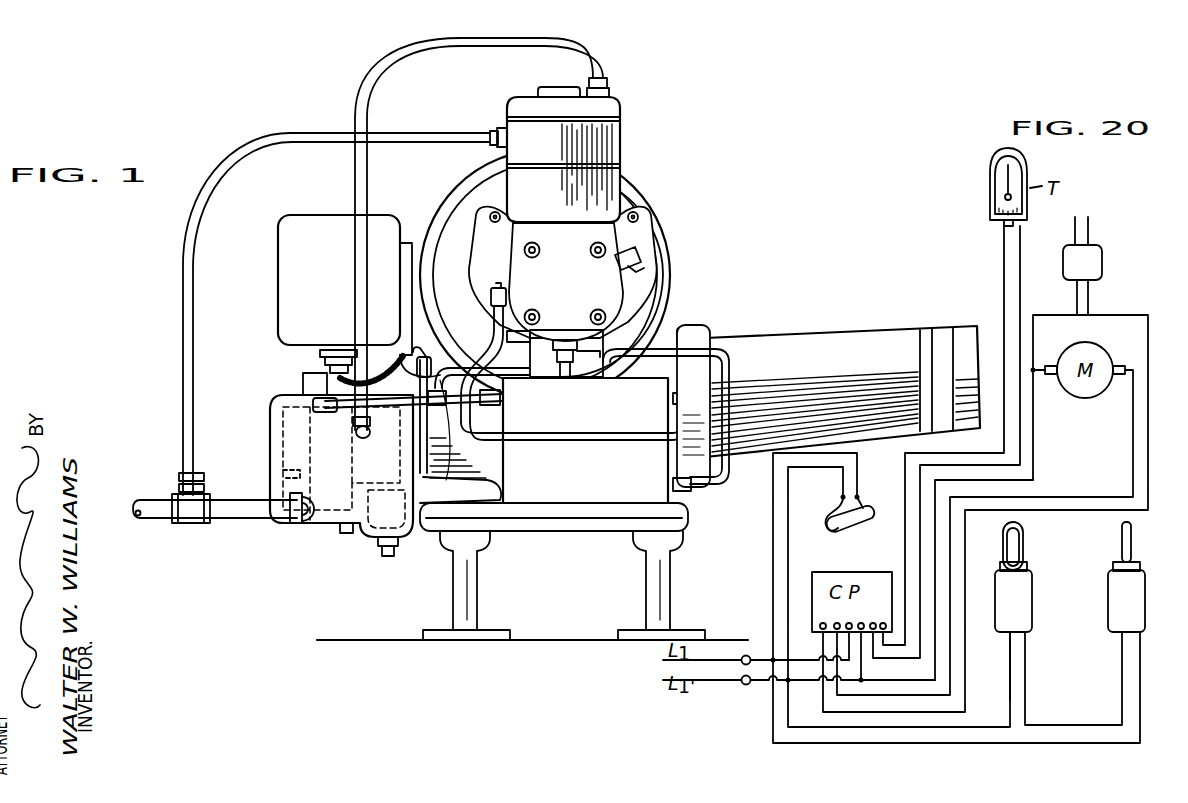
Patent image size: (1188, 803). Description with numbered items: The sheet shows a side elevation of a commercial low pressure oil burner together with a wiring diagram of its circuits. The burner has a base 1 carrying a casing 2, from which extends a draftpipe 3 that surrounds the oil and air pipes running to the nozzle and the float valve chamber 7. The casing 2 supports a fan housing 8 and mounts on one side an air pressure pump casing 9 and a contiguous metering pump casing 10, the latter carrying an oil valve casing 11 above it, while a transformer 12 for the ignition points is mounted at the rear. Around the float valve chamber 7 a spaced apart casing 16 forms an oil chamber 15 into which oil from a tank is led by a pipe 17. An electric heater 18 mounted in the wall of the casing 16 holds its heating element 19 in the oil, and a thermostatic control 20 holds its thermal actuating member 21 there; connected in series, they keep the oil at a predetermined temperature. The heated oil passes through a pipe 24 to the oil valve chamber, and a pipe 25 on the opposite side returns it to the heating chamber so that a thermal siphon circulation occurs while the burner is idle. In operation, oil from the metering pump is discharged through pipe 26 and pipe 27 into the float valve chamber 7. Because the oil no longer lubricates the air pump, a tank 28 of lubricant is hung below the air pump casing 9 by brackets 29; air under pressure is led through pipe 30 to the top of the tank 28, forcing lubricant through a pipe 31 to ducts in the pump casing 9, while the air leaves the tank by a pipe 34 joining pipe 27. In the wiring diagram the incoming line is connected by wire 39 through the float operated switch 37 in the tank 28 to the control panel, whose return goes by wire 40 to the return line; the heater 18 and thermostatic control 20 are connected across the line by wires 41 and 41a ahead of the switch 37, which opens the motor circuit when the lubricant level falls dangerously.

In FIG. 1, the base 1 is at (537, 514).
In FIG. 1, the casing 2 is at (447, 462).
In FIG. 1, the draftpipe 3 is at (767, 343).
In FIG. 1, the float valve chamber 7 is at (300, 447).
In FIG. 1, the fan housing 8 is at (645, 193).
In FIG. 1, the air pressure pump casing 9 is at (630, 240).
In FIG. 1, the metering pump casing 10 is at (628, 288).
In FIG. 1, the oil valve casing 11 is at (613, 173).
In FIG. 1, the transformer 12 is at (345, 299).
In FIG. 20, the transformer 12 is at (1082, 266).
In FIG. 1, the oil chamber 15 is at (287, 477).
In FIG. 1, the casing 16 is at (270, 420).
In FIG. 1, the pipe 17 is at (222, 518).
In FIG. 20, the electric heater 18 is at (1028, 617).
In FIG. 20, the heating element 19 is at (1025, 535).
In FIG. 20, the thermostatic control 20 is at (1110, 622).
In FIG. 20, the thermal actuating member 21 is at (1122, 541).
In FIG. 1, the pipe 24 is at (355, 319).
In FIG. 1, the pipe 25 is at (283, 133).
In FIG. 1, the pipe 26 is at (648, 303).
In FIG. 1, the pipe 27 is at (384, 410).
In FIG. 1, the tank 28 is at (573, 497).
In FIG. 1, the brackets 29 is at (620, 369).
In FIG. 1, the pipe 30 is at (497, 350).
In FIG. 1, the pipe 31 is at (733, 374).
In FIG. 1, the pipe 34 is at (474, 431).
In FIG. 20, the float operated switch 37 is at (849, 532).
In FIG. 20, the wire 39 is at (789, 553).
In FIG. 20, the wire 40 is at (864, 669).
In FIG. 20, the wire 41 is at (1138, 672).
In FIG. 20, the wire 41a is at (1010, 706).